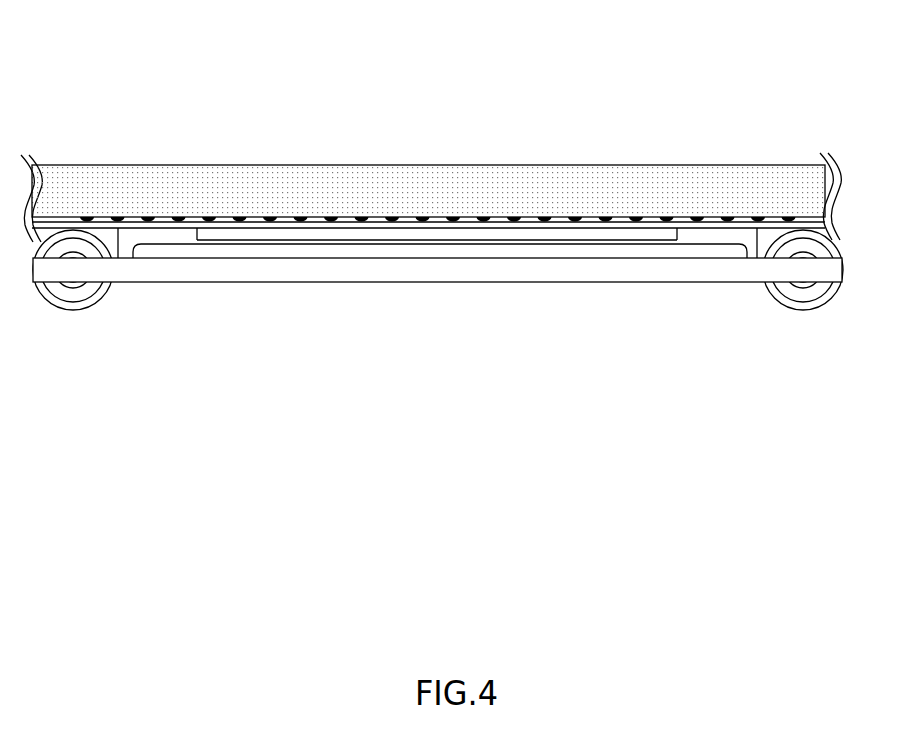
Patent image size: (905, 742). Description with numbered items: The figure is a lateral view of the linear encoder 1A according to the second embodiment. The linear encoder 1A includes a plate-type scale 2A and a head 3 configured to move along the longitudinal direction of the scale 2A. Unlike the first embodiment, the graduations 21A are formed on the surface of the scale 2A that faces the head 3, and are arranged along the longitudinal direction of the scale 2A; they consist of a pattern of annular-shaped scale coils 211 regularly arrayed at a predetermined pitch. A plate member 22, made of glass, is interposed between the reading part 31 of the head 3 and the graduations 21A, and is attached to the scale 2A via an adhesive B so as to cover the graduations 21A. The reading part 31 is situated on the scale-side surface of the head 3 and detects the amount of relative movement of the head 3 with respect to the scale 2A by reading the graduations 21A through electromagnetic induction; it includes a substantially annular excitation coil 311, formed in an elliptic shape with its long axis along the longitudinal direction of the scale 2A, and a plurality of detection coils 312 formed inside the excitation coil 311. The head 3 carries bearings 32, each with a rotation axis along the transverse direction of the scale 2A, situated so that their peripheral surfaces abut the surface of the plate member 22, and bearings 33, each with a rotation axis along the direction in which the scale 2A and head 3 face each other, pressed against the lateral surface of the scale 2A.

The linear encoder 1A is at (646, 99).
The scale 2A is at (498, 169).
The plate member 22 is at (132, 228).
The scale coils 211 is at (428, 169).
The graduations 21A is at (273, 217).
The adhesive B is at (438, 215).
The head 3 is at (620, 272).
The reading part 31 is at (440, 286).
The excitation coil 311 is at (440, 286).
The detection coils 312 is at (307, 250).
The bearings 32 is at (82, 310).
The bearings 33 is at (127, 252).